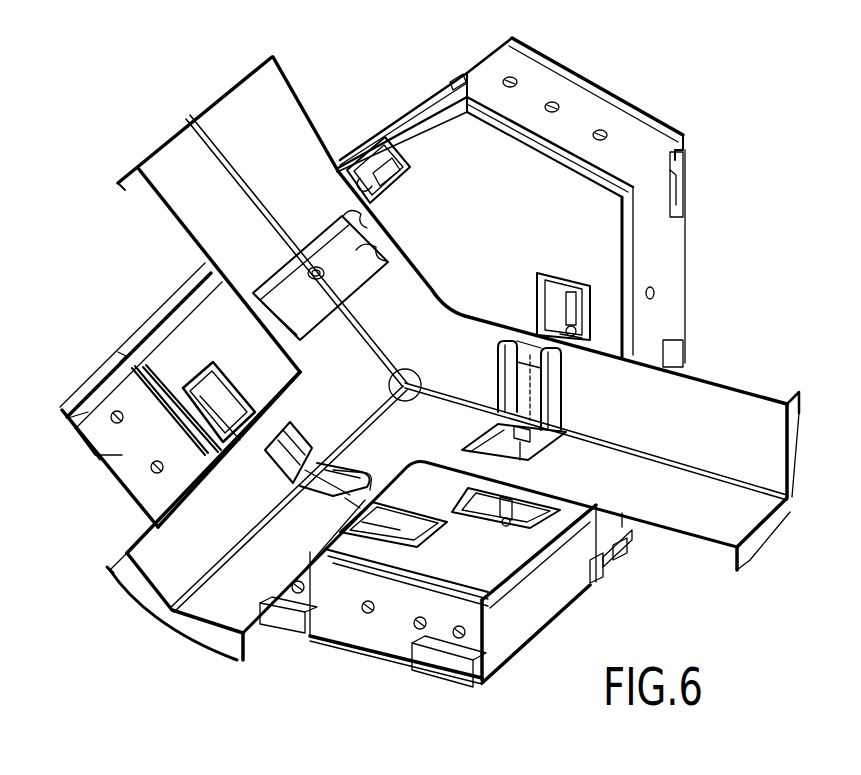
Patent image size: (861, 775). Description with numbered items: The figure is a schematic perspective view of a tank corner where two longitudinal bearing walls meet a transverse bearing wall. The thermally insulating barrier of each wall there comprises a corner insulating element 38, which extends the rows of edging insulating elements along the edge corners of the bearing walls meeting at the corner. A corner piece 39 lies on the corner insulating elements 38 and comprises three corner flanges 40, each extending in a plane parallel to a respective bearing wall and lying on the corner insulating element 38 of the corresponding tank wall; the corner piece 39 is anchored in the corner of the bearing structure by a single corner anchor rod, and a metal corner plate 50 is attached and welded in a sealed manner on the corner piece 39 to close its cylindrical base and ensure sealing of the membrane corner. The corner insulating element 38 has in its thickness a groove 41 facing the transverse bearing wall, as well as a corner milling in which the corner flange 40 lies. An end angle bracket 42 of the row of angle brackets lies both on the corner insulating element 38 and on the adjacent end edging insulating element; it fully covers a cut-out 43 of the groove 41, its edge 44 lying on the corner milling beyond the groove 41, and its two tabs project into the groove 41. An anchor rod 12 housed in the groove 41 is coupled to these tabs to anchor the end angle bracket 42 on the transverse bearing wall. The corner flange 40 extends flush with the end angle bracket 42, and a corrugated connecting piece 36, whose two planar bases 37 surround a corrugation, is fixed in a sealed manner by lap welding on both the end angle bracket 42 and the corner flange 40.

The anchor rod 12 is at (577, 330).
The corrugated connecting piece 36 is at (340, 167).
The planar base 37 is at (672, 367).
The corner insulating element 38 is at (117, 400).
The corner piece 39 is at (397, 447).
The corner flange 40 is at (325, 380).
The groove 41 is at (587, 297).
The end angle bracket 42 is at (228, 110).
The cut-out 43 is at (563, 283).
The edge 44 is at (327, 630).
The metal corner plate 50 is at (413, 350).